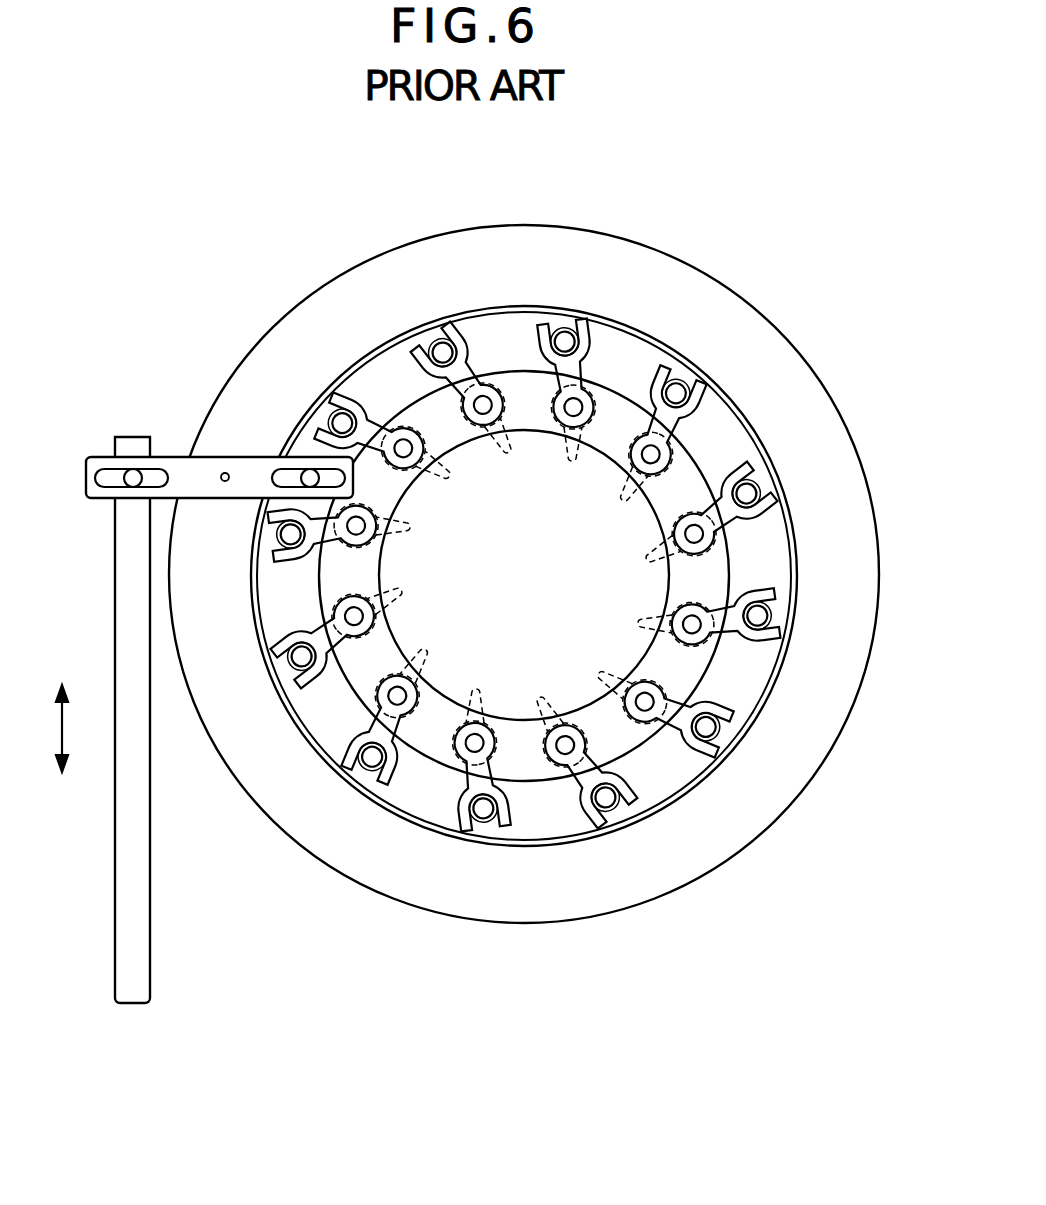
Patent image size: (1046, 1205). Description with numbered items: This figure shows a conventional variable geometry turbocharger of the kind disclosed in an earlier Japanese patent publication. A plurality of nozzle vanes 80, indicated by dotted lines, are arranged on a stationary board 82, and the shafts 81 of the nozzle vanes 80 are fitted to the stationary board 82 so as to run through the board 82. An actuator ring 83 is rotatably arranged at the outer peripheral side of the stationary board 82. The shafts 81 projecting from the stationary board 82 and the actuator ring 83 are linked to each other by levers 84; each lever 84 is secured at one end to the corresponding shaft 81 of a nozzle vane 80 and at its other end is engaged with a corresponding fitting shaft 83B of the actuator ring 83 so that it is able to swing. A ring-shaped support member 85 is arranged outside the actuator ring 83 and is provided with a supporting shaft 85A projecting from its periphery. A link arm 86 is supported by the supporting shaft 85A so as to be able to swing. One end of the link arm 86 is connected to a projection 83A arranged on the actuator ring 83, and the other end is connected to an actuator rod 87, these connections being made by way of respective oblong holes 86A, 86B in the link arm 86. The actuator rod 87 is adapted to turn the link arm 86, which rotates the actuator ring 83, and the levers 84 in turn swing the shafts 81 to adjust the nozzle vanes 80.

The nozzle vane 80 is at (690, 755).
The shaft 81 is at (583, 405).
The stationary board 82 is at (533, 767).
The actuator ring 83 is at (422, 800).
The projection 83A is at (308, 470).
The fitting shaft 83B is at (563, 336).
The lever 84 is at (580, 350).
The ring-shaped support member 85 is at (288, 817).
The supporting shaft 85A is at (226, 470).
The link arm 86 is at (177, 468).
The oblong hole 86A is at (288, 473).
The oblong hole 86B is at (90, 497).
The actuator rod 87 is at (142, 909).